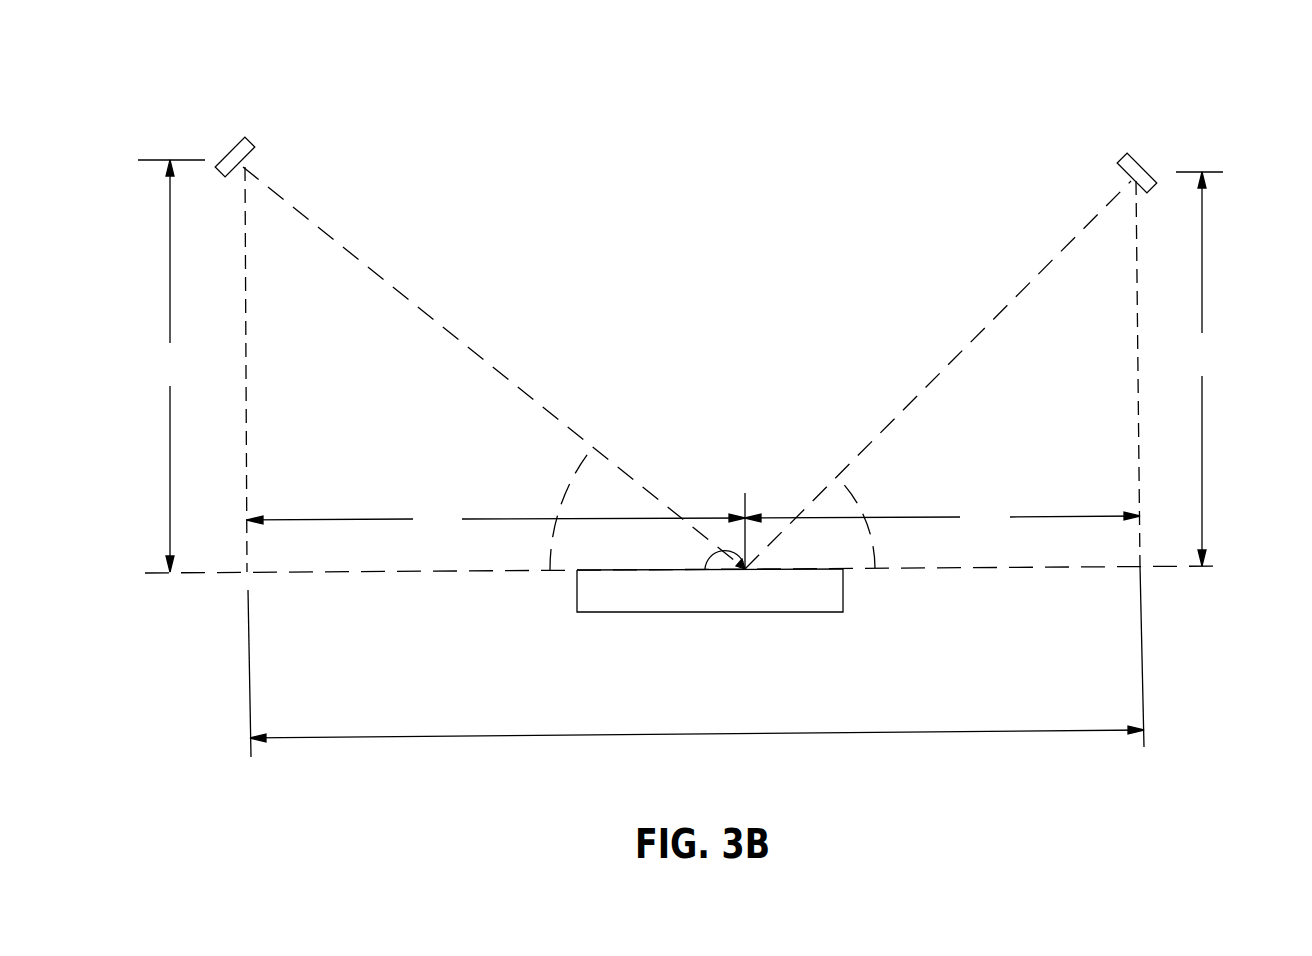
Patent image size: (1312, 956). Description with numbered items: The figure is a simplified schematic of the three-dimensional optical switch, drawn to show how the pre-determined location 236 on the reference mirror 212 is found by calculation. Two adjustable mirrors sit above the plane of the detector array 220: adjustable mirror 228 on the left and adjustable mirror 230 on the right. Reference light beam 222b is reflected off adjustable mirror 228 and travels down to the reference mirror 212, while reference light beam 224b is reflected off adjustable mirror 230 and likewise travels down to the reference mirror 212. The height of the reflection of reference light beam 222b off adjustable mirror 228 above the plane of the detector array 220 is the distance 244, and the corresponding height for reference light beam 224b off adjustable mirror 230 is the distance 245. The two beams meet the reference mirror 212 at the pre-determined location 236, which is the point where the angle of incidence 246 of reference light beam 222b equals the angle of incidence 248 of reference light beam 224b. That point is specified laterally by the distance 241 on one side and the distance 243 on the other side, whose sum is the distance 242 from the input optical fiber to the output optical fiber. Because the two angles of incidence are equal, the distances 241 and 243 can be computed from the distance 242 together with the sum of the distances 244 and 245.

The adjustable mirror 228 is at (238, 138).
The adjustable mirror 230 is at (1139, 158).
The reference light beam 222b is at (318, 218).
The reference light beam 224b is at (1060, 242).
The distance 244 is at (170, 292).
The distance 245 is at (1205, 293).
The distance 241 is at (358, 520).
The distance 243 is at (1045, 517).
The distance 242 is at (705, 734).
The angle of incidence 246 is at (580, 478).
The angle of incidence 248 is at (862, 500).
The detector array 220 is at (823, 600).
The reference mirror 212 is at (643, 573).
The pre-determined location 236 is at (703, 575).